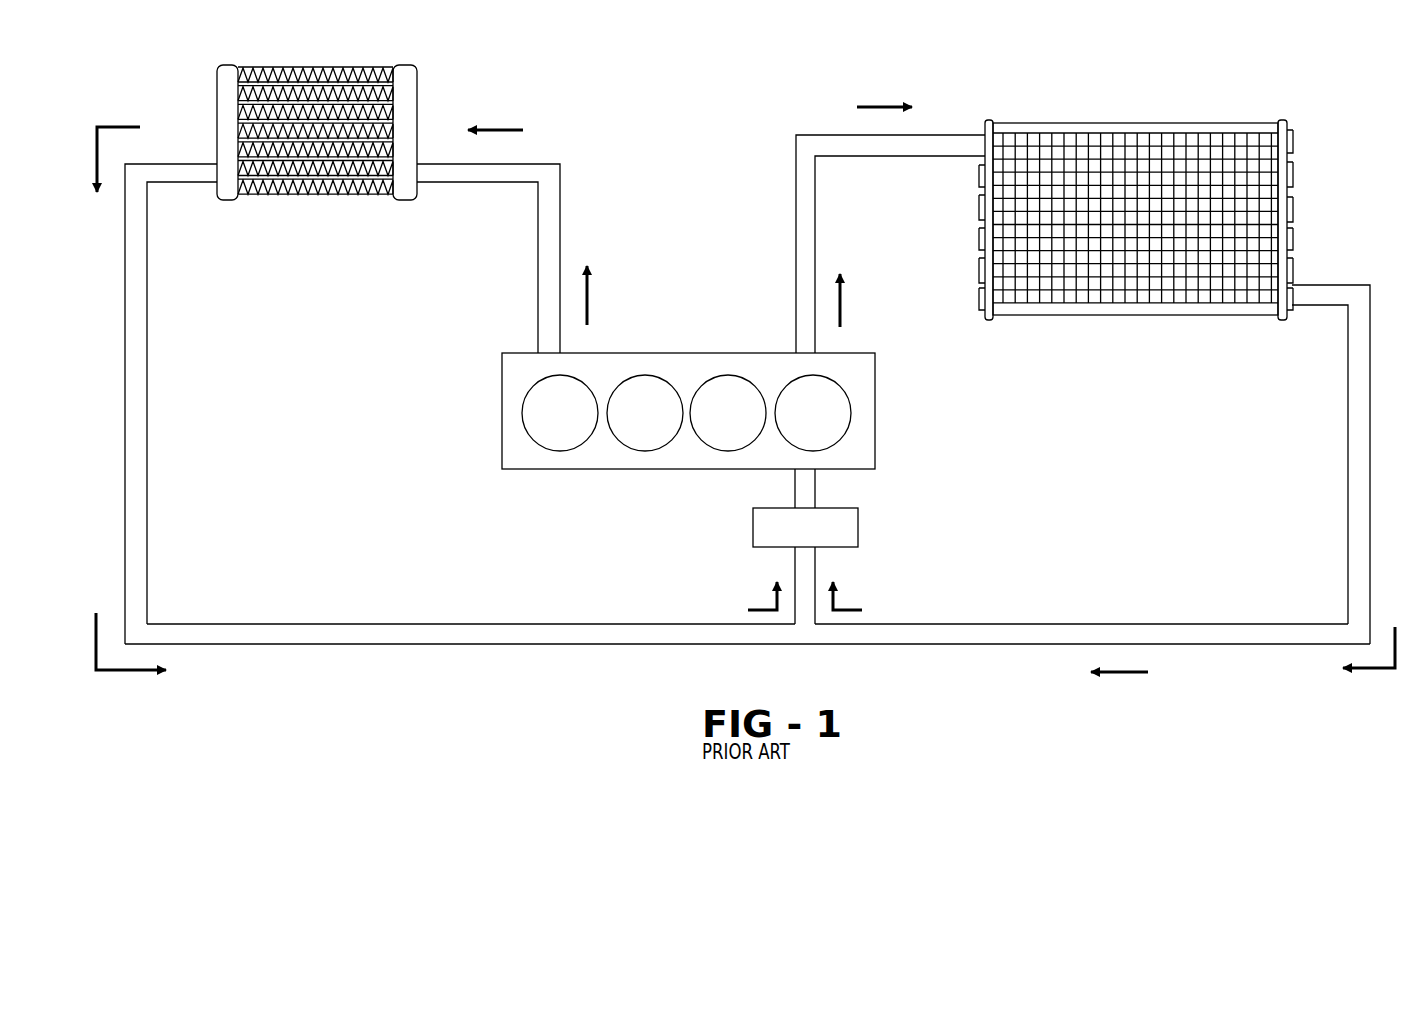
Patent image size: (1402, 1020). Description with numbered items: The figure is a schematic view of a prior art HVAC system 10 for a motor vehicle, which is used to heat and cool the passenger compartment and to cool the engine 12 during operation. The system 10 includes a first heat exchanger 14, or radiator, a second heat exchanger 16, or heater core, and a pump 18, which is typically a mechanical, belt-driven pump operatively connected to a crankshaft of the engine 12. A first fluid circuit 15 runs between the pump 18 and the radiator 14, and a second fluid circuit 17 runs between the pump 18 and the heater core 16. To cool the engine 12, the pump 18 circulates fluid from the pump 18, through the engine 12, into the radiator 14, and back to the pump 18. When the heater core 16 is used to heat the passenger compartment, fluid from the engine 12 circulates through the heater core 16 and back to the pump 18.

The HVAC system 10 is at (662, 130).
The engine 12 is at (657, 470).
The first heat exchanger 14 is at (1147, 320).
The first fluid circuit 15 is at (815, 195).
The second heat exchanger 16 is at (310, 199).
The second fluid circuit 17 is at (470, 182).
The pump 18 is at (858, 523).